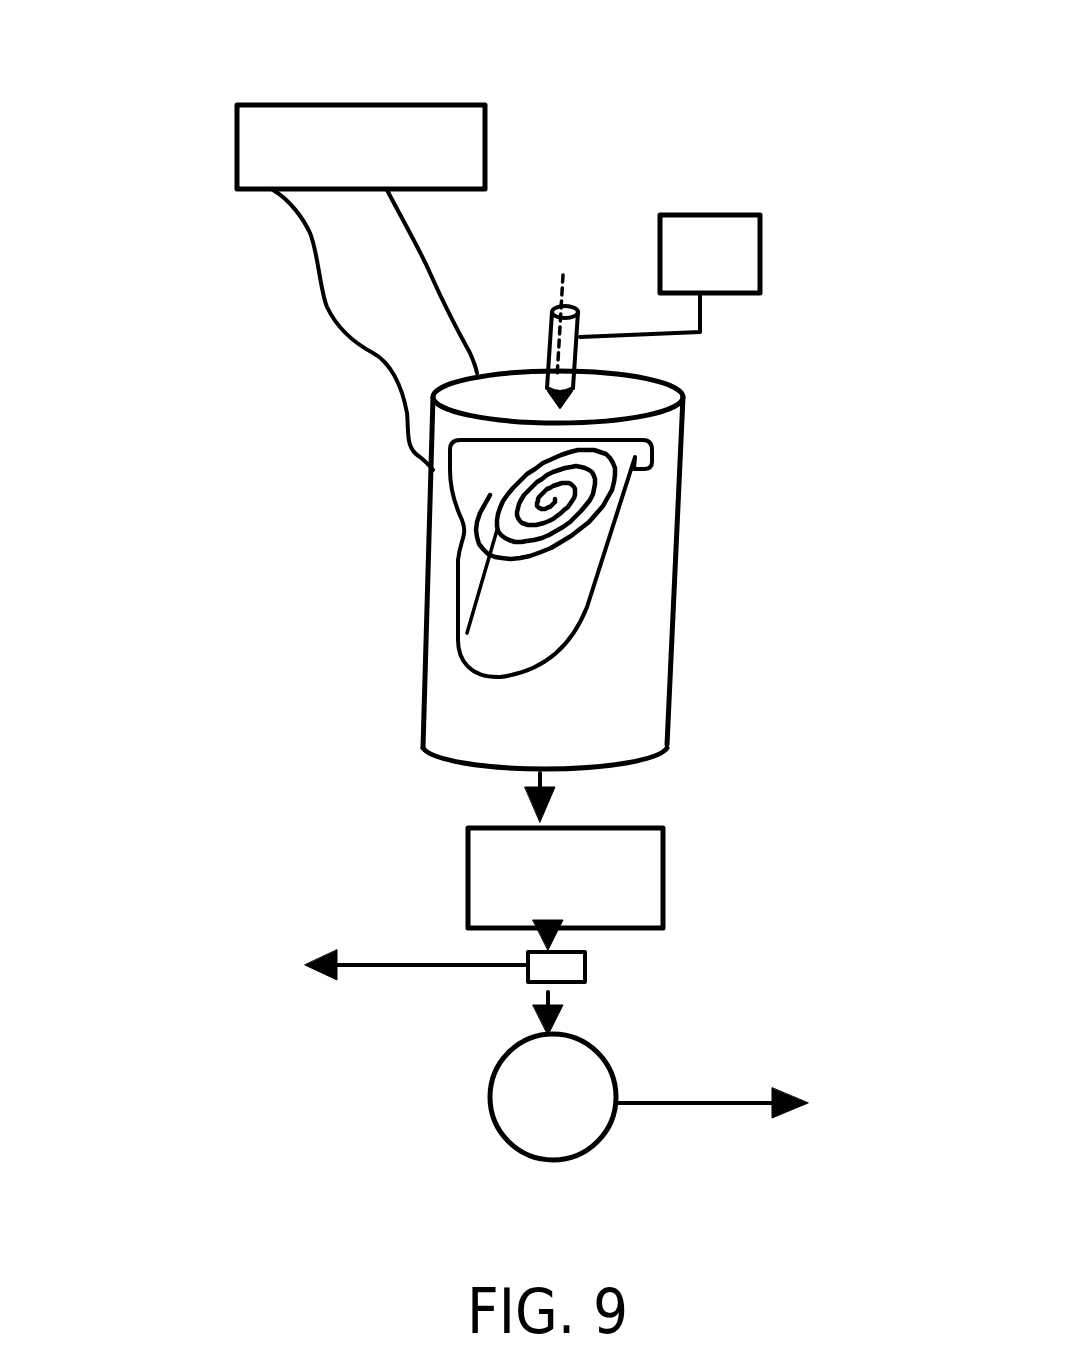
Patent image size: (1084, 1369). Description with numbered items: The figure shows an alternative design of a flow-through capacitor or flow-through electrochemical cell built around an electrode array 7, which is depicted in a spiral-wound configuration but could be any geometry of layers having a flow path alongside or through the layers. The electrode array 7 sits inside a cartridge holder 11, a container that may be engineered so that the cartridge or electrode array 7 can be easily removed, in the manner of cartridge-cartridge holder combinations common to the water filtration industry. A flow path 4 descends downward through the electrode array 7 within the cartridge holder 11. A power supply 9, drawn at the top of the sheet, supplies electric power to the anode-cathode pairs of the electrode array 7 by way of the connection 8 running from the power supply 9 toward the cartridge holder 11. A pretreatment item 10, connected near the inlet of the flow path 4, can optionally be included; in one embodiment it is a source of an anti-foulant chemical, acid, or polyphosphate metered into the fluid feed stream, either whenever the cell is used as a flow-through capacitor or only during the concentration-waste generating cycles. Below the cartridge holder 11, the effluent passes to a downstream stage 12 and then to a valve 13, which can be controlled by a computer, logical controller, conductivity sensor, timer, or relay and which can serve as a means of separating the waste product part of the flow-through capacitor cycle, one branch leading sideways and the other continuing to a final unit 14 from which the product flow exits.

The flow path 4 is at (557, 298).
The electrode array 7 is at (530, 592).
The feed hose 8 is at (457, 333).
The power supply 9 is at (382, 105).
The pretreatment item 10 is at (715, 215).
The cartridge holder 11 is at (655, 552).
The processing stage 12 is at (612, 865).
The valve 13 is at (573, 967).
The pump / outlet unit 14 is at (535, 1085).